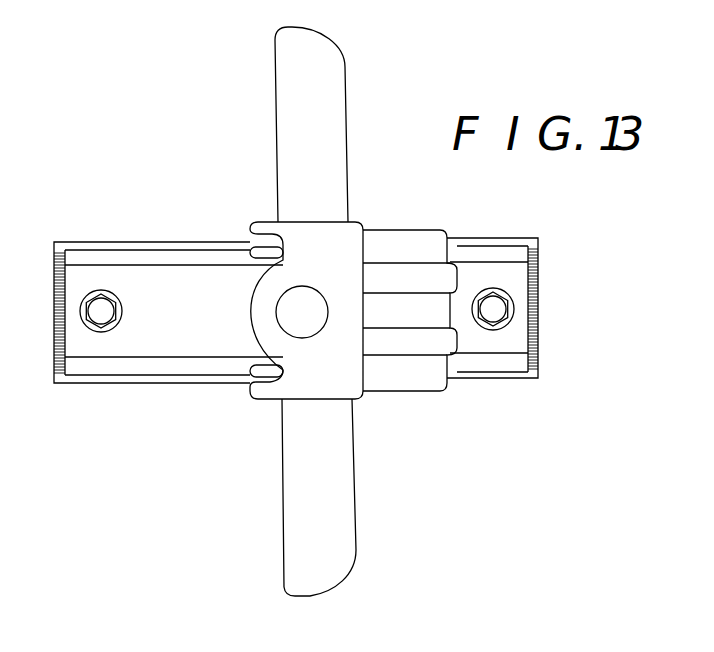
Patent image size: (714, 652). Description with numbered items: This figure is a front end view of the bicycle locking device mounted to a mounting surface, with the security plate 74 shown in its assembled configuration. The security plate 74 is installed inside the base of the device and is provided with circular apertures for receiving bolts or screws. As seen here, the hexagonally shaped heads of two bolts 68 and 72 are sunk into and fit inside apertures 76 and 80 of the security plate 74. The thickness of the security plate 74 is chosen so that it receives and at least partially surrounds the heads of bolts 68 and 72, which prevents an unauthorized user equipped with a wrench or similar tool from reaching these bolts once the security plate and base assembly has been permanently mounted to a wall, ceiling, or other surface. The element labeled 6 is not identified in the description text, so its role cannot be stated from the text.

The blade 6 is at (339, 81).
The hexagonally shaped head bolt 68 is at (496, 306).
The hexagonally shaped head bolt 72 is at (101, 310).
The security plate 74 is at (522, 341).
The circular aperture 76 is at (493, 331).
The circular aperture 80 is at (108, 333).